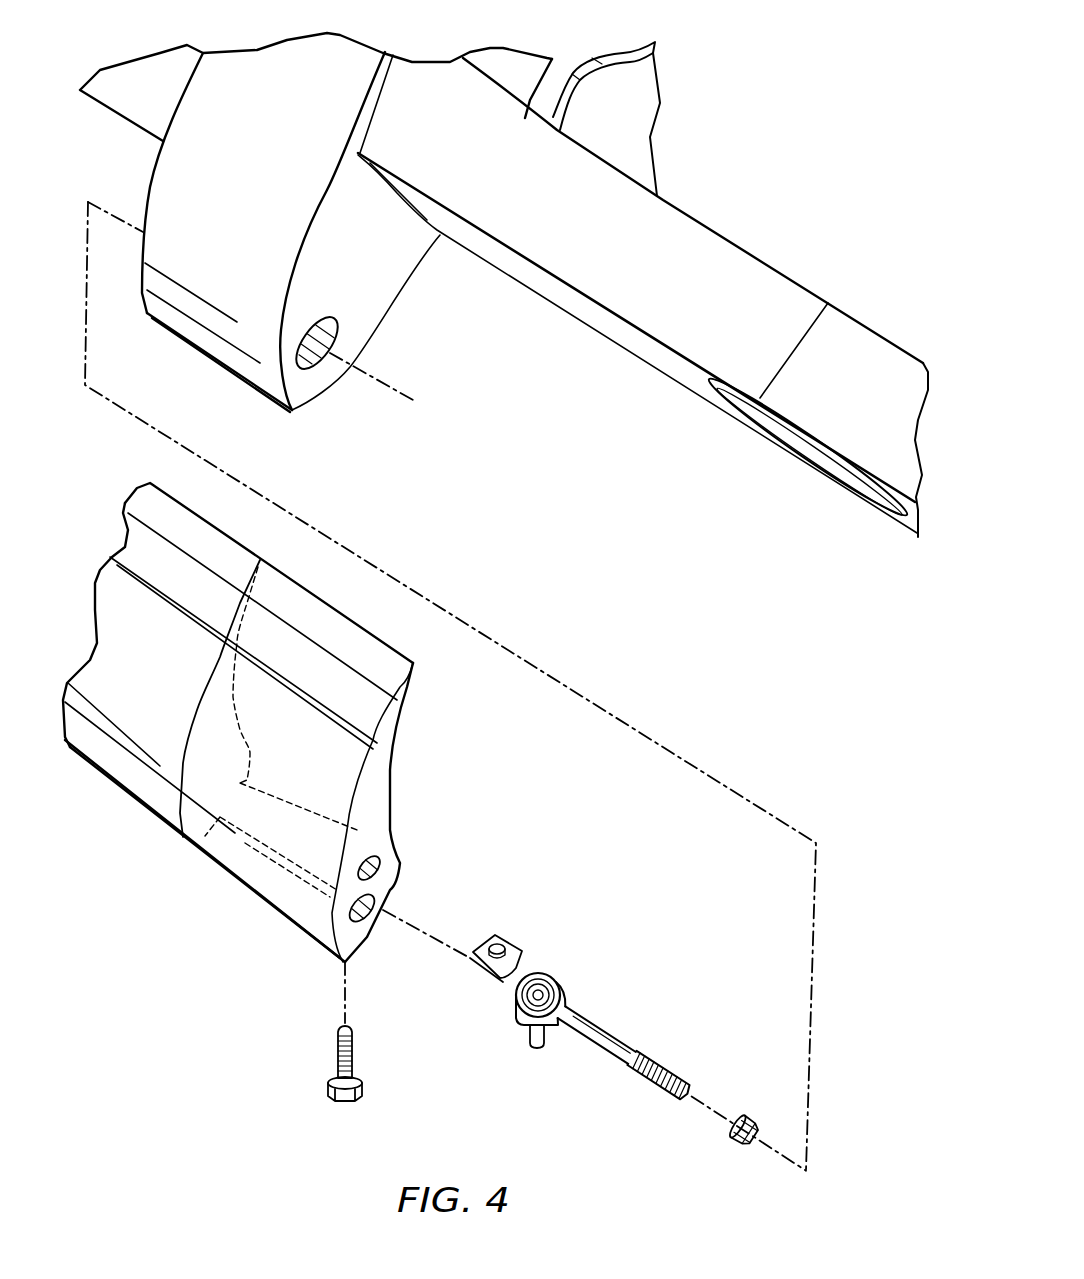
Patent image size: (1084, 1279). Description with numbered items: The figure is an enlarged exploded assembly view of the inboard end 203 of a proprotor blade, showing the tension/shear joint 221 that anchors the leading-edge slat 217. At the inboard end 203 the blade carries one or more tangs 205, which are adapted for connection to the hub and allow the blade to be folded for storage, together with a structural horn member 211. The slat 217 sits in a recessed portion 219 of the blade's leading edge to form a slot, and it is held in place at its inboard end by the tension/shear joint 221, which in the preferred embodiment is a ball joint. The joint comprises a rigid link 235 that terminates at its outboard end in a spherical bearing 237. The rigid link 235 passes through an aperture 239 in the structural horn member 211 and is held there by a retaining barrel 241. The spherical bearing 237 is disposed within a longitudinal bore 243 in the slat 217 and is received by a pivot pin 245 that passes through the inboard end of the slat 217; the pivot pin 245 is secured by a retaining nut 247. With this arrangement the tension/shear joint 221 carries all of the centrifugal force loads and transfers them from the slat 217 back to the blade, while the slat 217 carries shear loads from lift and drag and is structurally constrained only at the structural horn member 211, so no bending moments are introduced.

The inboard end 203 is at (674, 92).
The tangs 205 is at (562, 296).
The structural horn member 211 is at (213, 342).
The slat 217 is at (140, 790).
The recessed portion 219 is at (135, 178).
The tension/shear joint 221 is at (577, 1102).
The rigid link 235 is at (603, 1037).
The spherical bearing 237 is at (547, 980).
The aperture 239 is at (317, 362).
The retaining barrel 241 is at (743, 1120).
The longitudinal bore 243 is at (380, 927).
The pivot pin 245 is at (336, 1050).
The retaining nut 247 is at (500, 944).